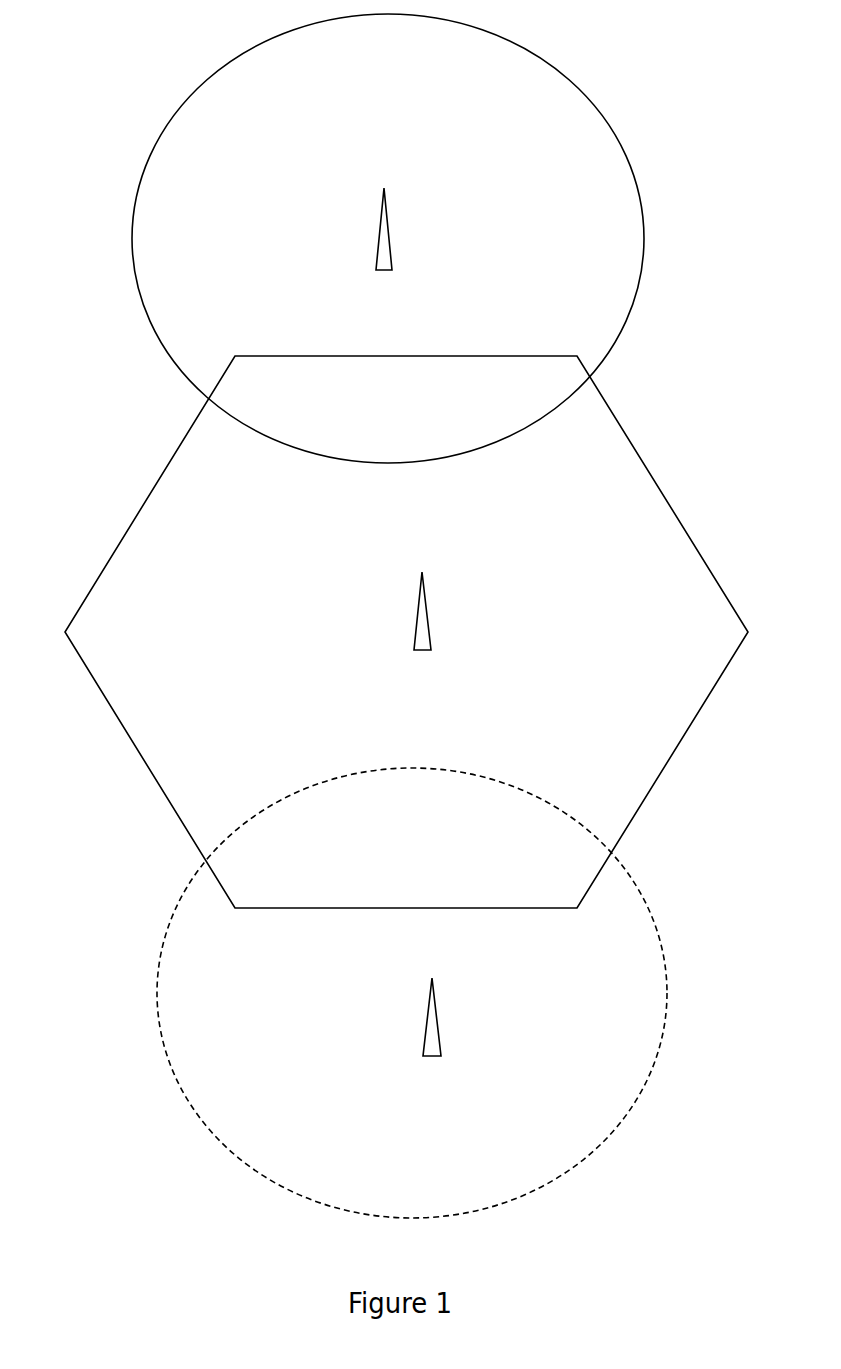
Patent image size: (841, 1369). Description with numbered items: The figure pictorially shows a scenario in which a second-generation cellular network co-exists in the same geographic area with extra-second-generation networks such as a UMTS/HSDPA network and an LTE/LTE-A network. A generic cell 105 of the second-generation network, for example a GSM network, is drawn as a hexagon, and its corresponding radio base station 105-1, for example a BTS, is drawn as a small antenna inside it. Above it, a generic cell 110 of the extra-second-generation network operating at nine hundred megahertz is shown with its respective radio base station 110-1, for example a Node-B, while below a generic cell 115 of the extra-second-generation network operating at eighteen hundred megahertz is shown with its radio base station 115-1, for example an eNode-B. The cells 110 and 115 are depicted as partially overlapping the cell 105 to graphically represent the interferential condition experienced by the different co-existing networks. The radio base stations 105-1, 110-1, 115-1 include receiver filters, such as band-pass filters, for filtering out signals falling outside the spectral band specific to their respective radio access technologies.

The cell of the 2G network 105 is at (110, 708).
The radio base station of the 2G network 105-1 is at (415, 622).
The cell of the extra-2G network operating at 900 MHz 110 is at (147, 315).
The radio base station of the 900 MHz extra-2G network 110-1 is at (377, 240).
The cell of the extra-2G network operating at 1800 MHz 115 is at (165, 1042).
The radio base station of the 1800 MHz extra-2G network 115-1 is at (423, 1056).